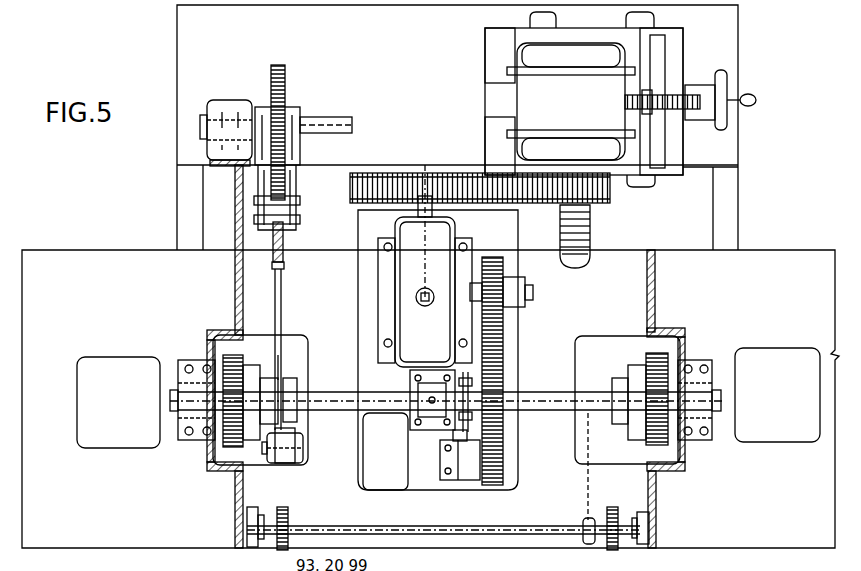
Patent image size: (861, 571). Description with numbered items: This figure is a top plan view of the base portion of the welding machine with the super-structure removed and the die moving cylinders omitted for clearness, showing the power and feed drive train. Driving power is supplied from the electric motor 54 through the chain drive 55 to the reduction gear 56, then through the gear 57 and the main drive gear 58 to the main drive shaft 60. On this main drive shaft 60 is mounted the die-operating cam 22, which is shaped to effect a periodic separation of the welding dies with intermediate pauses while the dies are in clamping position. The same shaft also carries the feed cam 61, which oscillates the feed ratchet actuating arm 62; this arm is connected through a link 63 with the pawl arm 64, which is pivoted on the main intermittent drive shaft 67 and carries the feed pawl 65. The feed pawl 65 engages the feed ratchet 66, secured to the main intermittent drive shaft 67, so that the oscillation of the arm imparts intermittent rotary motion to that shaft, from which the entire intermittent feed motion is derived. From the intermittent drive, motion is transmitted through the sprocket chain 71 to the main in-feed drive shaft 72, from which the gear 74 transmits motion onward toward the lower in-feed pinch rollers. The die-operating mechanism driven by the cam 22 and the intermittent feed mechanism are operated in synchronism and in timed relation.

The die-operating cam 22 is at (232, 462).
The electric motor 54 is at (608, 85).
The chain drive 55 is at (598, 203).
The reduction gear 56 is at (400, 234).
The gear 57 is at (503, 270).
The main drive gear 58 is at (503, 470).
The main drive shaft 60 is at (553, 400).
The feed cam 61 is at (288, 365).
The feed ratchet actuating arm 62 is at (305, 462).
The link 63 is at (282, 303).
The pawl arm 64 is at (290, 186).
The feed pawl 65 is at (272, 205).
The feed ratchet 66 is at (286, 88).
The main intermittent drive shaft 67 is at (345, 119).
The sprocket chain 71 is at (585, 498).
The main in-feed drive shaft 72 is at (448, 524).
The gear 74 is at (288, 512).